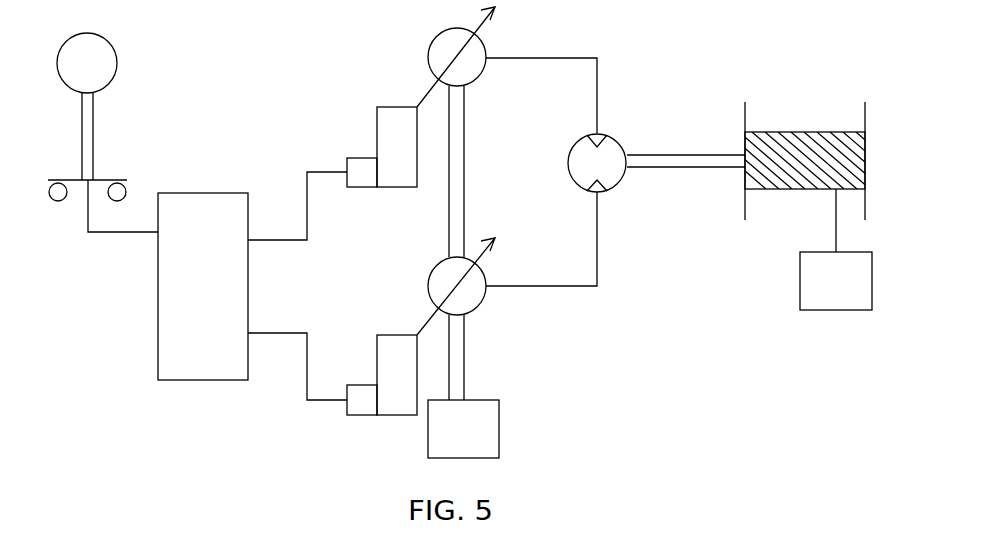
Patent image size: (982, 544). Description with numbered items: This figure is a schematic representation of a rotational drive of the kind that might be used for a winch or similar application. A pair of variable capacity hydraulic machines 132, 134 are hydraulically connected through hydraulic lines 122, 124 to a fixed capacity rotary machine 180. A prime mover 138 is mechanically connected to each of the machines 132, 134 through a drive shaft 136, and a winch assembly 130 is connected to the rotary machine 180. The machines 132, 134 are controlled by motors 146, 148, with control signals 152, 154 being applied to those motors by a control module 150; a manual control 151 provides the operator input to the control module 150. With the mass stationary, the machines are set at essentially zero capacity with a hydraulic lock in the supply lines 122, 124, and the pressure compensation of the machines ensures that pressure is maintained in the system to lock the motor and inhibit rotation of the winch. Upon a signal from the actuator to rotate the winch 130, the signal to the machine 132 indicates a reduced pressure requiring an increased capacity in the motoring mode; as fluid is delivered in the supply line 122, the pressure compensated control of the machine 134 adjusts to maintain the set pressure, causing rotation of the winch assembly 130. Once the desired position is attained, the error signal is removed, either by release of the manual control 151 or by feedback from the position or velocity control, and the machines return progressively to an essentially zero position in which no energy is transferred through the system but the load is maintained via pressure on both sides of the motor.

The hydraulic line 122 is at (598, 83).
The hydraulic line 124 is at (600, 275).
The winch assembly 130 is at (805, 132).
The variable capacity hydraulic machine 132 is at (448, 260).
The variable capacity hydraulic machine 134 is at (427, 55).
The drive shaft 136 is at (459, 145).
The prime mover 138 is at (493, 448).
The motor 146 is at (402, 410).
The motor 148 is at (377, 125).
The control module 150 is at (187, 375).
The manual control 151 is at (95, 137).
The control signal 152 is at (308, 348).
The control signal 154 is at (307, 193).
The fixed capacity rotary machine 180 is at (612, 180).